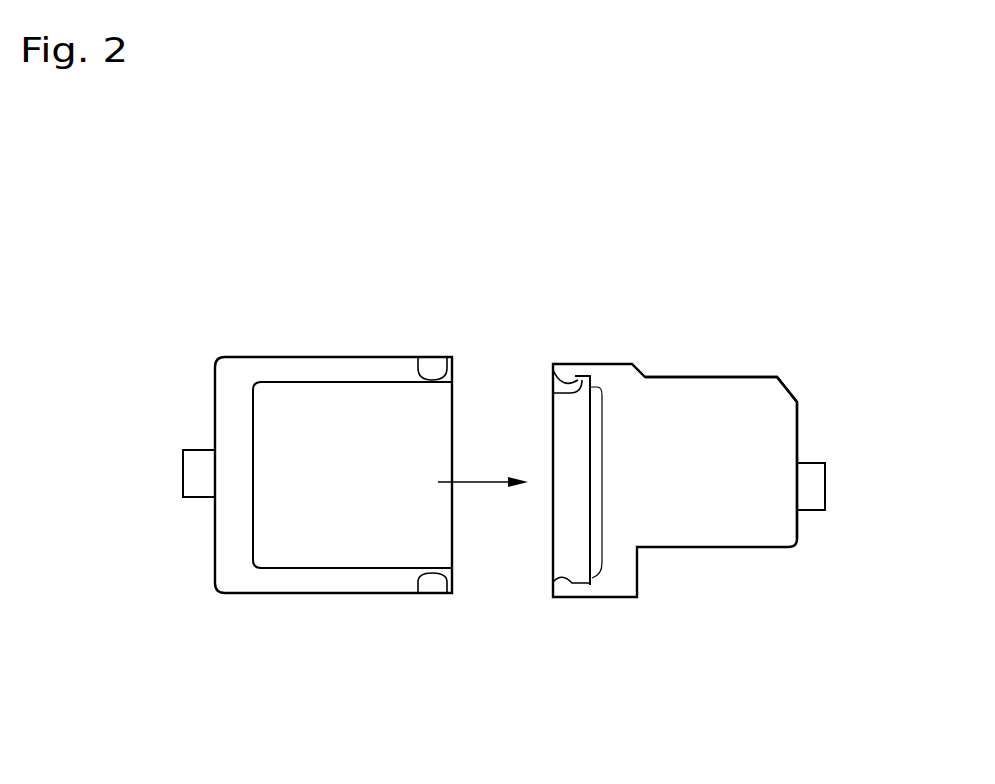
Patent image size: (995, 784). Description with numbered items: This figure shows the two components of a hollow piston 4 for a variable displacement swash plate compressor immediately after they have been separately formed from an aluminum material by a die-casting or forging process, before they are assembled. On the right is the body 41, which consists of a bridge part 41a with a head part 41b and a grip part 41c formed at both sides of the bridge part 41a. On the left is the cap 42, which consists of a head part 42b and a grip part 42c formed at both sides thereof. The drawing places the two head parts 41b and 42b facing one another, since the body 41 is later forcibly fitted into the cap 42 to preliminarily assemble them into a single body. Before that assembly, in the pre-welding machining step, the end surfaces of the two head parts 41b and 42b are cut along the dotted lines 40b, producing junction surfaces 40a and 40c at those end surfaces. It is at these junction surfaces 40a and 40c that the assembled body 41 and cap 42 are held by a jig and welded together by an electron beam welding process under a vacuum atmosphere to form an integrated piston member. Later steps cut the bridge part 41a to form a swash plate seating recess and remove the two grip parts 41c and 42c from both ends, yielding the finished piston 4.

The hollow piston 4 is at (250, 617).
The body 41 is at (670, 375).
The bridge part 41a is at (747, 397).
The head part 41b is at (580, 375).
The grip part 41c is at (812, 480).
The cap 42 is at (300, 358).
The head part 42b is at (333, 370).
The grip part 42c is at (197, 480).
The junction surface 40a is at (556, 392).
The dotted lines 40b is at (602, 538).
The junction surface 40c is at (448, 368).